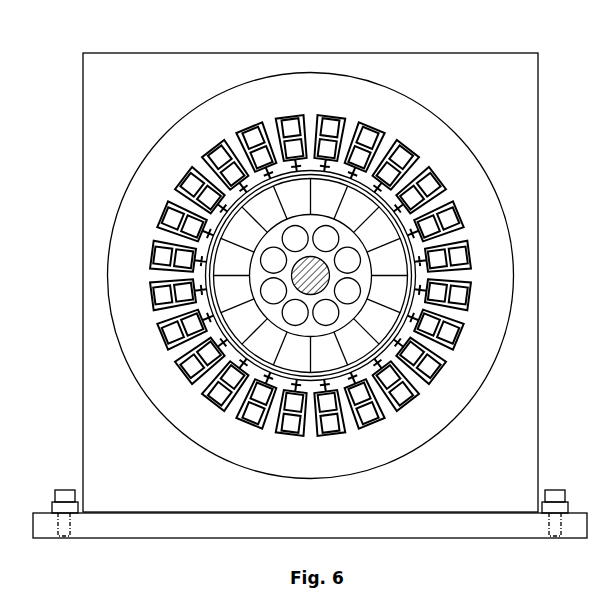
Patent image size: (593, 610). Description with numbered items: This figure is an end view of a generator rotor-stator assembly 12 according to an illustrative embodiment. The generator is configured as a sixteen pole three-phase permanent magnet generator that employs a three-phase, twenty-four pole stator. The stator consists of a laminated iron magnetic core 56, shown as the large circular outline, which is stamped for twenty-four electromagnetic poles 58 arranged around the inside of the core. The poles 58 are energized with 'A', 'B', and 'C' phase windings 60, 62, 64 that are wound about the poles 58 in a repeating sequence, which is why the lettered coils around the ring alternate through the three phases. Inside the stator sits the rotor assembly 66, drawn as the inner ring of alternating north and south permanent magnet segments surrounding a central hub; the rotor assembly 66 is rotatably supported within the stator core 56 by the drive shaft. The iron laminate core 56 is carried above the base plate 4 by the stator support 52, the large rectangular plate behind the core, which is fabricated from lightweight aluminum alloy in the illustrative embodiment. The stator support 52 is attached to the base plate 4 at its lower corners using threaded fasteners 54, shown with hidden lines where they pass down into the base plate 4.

The base plate 4 is at (310, 543).
The generator rotor-stator assembly 12 is at (313, 324).
The stator support 52 is at (290, 282).
The threaded fasteners 54 is at (316, 489).
The laminated iron magnetic core 56 is at (311, 276).
The electromagnetic poles 58 is at (310, 279).
The 'A' phase winding 60 is at (286, 132).
The 'B' phase winding 62 is at (330, 132).
The 'C' phase winding 64 is at (364, 143).
The rotor assembly 66 is at (350, 249).